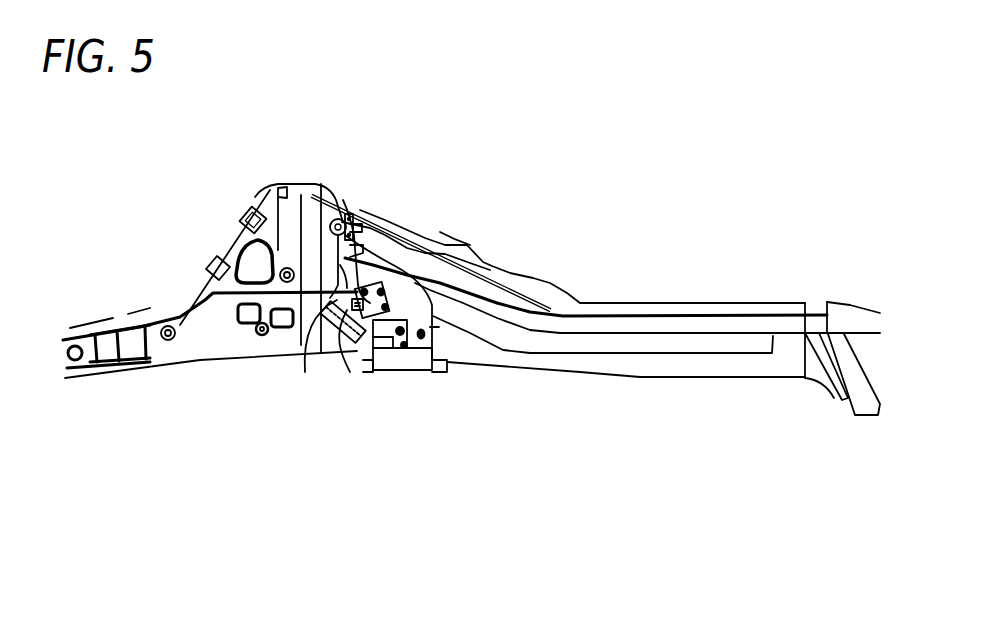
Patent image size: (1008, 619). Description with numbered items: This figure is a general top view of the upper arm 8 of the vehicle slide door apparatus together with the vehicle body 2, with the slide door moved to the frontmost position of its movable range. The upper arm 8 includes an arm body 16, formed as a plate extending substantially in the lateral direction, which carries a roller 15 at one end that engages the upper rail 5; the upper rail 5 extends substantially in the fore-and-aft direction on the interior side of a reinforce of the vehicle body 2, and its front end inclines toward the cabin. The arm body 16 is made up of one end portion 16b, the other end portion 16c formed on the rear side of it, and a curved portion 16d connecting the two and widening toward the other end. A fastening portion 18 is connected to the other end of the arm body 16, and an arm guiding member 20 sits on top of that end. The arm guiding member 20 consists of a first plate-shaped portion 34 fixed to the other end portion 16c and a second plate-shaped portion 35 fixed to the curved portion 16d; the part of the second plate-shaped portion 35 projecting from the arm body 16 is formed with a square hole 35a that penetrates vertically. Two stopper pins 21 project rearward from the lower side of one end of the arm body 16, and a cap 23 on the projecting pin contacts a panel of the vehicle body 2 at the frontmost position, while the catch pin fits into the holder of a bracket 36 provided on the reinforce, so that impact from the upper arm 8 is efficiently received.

The vehicle body 2 is at (490, 260).
The upper rail 5 is at (573, 302).
The upper arm 8 is at (503, 279).
The roller 15 is at (352, 222).
The arm body 16 is at (310, 248).
The one end portion 16b is at (243, 217).
The other end portion 16c is at (445, 330).
The curved portion 16d is at (441, 297).
The fastening portion 18 is at (403, 348).
The arm guiding member 20 is at (338, 334).
The stopper pins 21 is at (398, 273).
The cap 23 is at (327, 212).
The first plate-shaped portion 34 is at (386, 352).
The second plate-shaped portion 35 is at (210, 271).
The square hole 35a is at (302, 325).
The bracket 36 is at (321, 330).